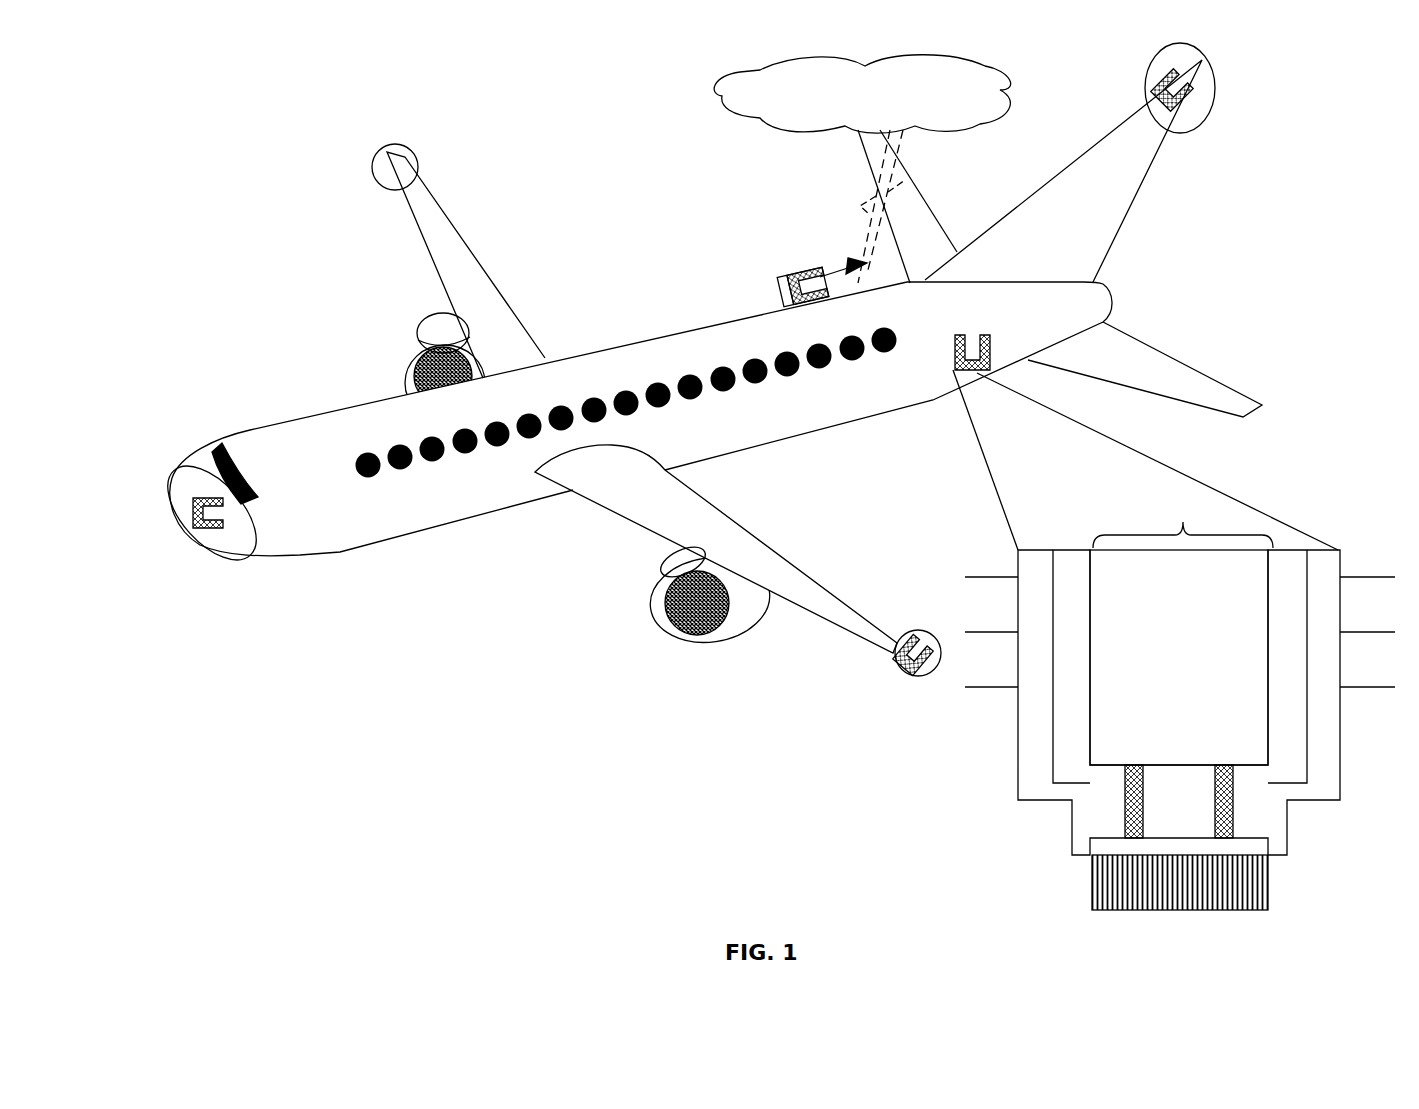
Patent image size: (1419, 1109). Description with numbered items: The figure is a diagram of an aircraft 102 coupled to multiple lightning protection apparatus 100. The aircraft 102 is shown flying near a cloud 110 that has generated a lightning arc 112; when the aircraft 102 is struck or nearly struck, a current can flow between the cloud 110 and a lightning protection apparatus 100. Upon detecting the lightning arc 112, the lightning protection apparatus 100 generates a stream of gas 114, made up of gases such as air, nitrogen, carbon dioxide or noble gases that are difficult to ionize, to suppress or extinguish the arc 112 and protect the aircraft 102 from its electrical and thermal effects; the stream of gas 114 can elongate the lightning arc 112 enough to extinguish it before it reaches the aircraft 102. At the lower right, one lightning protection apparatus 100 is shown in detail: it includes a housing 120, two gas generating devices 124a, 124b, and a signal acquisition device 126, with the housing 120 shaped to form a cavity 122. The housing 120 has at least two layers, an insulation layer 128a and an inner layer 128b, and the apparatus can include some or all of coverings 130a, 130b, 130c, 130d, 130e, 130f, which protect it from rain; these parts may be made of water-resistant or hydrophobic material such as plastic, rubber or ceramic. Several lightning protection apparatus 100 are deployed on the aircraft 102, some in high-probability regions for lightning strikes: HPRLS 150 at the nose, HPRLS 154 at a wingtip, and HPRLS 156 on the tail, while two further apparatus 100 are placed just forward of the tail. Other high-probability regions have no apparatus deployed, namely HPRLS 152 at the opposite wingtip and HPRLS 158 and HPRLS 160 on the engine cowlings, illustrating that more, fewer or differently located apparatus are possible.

The lightning protection apparatus 100 is at (790, 288).
The aircraft 102 is at (716, 356).
The cloud 110 is at (862, 94).
The lightning arc 112 is at (863, 172).
The stream of gas 114 is at (840, 262).
The housing 120 is at (1343, 783).
The cavity 122 is at (1183, 520).
The gas generating device 124a is at (1138, 764).
The gas generating device 124b is at (1227, 764).
The signal acquisition device 126 is at (1090, 900).
The insulation layer 128a is at (1040, 549).
The inner layer 128b is at (1268, 590).
The covering 130a is at (962, 576).
The covering 130b is at (984, 632).
The covering 130c is at (984, 687).
The covering 130d is at (1367, 577).
The covering 130e is at (1367, 632).
The covering 130f is at (1367, 687).
The high-probability region for lightning strikes 150 is at (240, 556).
The high-probability region for lightning strikes 152 is at (410, 148).
The high-probability region for lightning strikes 154 is at (902, 634).
The high-probability region for lightning strikes 156 is at (1187, 133).
The high-probability region for lightning strikes 158 is at (418, 332).
The high-probability region for lightning strikes 160 is at (664, 560).